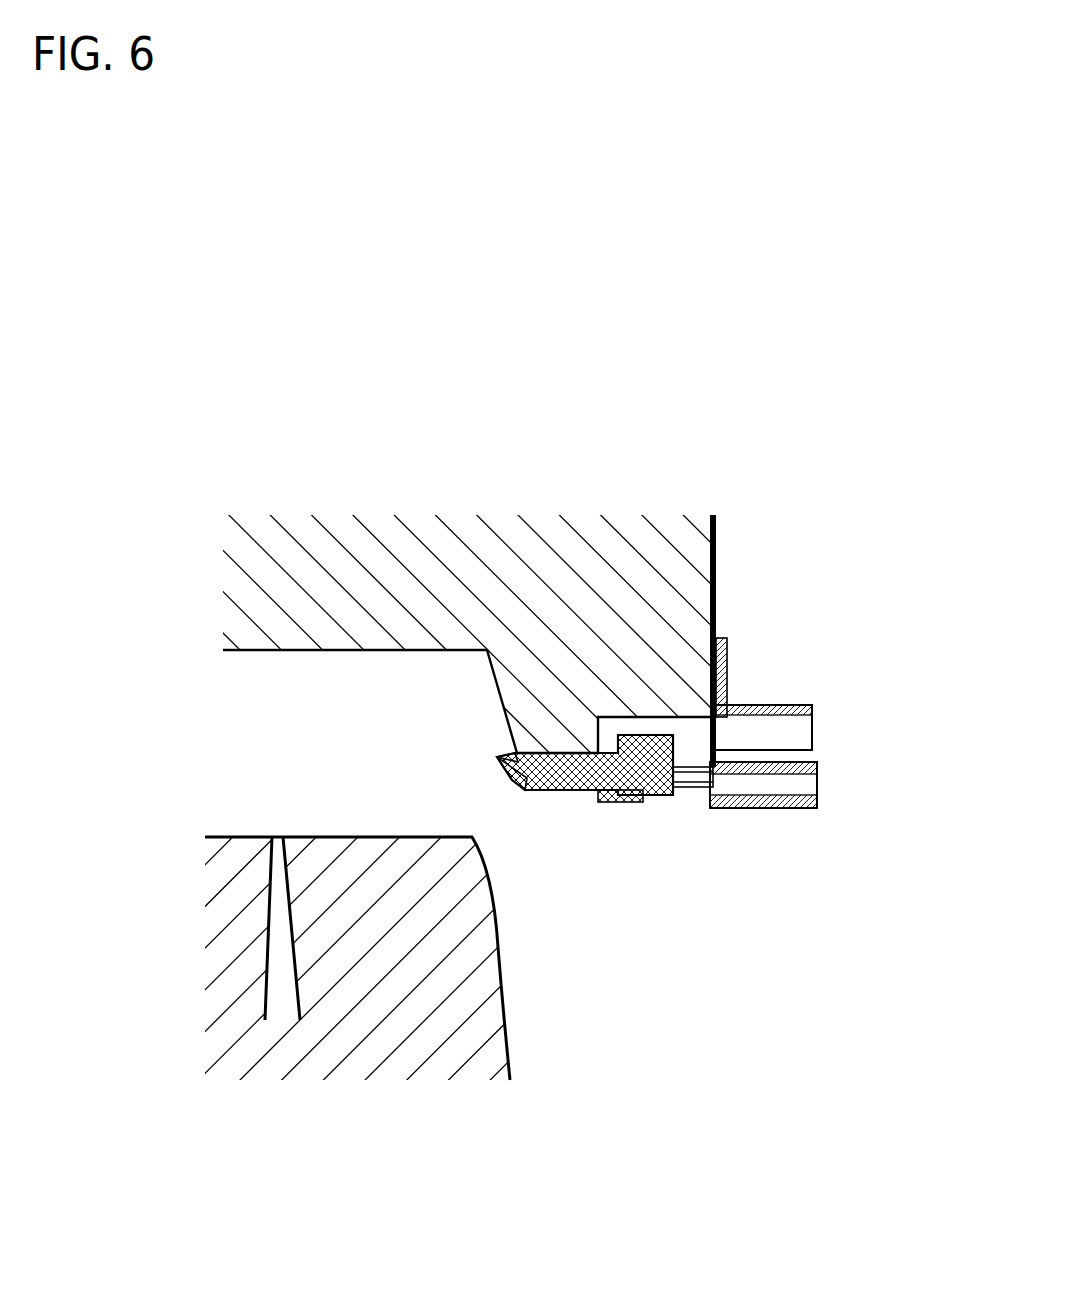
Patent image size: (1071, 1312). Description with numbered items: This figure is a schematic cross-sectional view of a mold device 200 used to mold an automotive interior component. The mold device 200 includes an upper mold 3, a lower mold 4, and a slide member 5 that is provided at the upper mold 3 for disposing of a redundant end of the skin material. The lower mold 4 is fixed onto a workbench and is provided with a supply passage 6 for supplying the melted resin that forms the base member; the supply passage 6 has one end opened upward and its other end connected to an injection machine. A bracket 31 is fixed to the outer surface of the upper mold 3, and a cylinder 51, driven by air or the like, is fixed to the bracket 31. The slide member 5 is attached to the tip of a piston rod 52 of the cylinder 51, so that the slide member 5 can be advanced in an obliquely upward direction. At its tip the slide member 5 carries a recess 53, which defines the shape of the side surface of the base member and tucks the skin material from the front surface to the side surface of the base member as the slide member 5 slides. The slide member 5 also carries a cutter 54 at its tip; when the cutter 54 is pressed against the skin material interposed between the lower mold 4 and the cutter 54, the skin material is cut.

The mold device 200 is at (286, 462).
The upper mold 3 is at (525, 550).
The bracket 31 is at (728, 667).
The lower mold 4 is at (415, 1015).
The slide member 5 is at (560, 790).
The cylinder 51 is at (800, 785).
The piston rod 52 is at (692, 784).
The recess 53 is at (497, 753).
The cutter 54 is at (505, 775).
The supply passage 6 is at (268, 990).